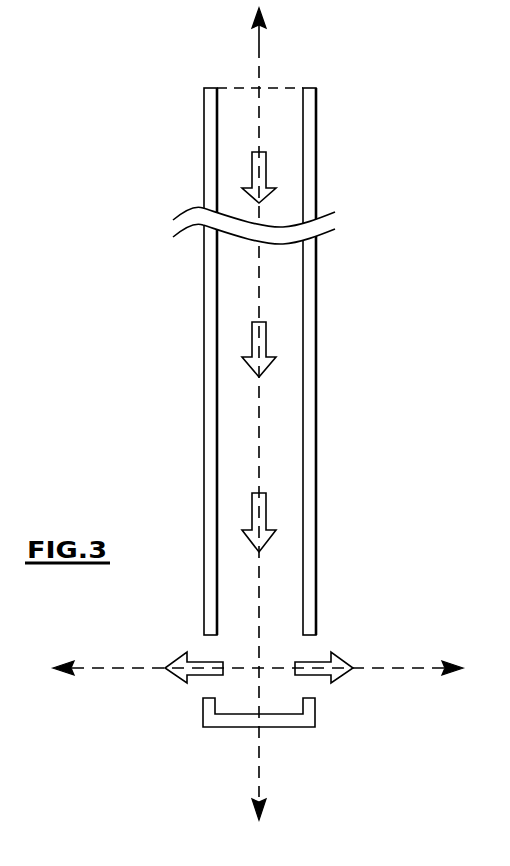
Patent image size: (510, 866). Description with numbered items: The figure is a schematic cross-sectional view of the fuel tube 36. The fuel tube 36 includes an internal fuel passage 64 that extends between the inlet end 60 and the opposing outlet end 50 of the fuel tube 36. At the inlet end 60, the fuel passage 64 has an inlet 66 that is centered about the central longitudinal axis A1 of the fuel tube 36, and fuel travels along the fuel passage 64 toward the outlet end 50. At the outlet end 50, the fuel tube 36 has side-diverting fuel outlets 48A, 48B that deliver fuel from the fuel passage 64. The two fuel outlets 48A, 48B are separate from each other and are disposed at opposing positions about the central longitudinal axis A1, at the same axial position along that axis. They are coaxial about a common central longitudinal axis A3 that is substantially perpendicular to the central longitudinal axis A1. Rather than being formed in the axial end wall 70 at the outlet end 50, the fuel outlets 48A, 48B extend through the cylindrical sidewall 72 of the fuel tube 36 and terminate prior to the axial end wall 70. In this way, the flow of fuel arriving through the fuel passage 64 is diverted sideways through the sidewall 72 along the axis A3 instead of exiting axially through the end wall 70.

The fuel tube 36 is at (341, 312).
The outlet end 50 is at (224, 746).
The inlet end 60 is at (286, 70).
The internal fuel passage 64 is at (233, 310).
The inlet 66 is at (238, 88).
The axial end wall 70 is at (283, 722).
The cylindrical sidewall 72 is at (212, 483).
The side-diverting fuel outlet 48A is at (193, 638).
The side-diverting fuel outlet 48B is at (319, 640).
The central longitudinal axis A1 is at (259, 407).
The common central longitudinal axis A3 is at (97, 668).